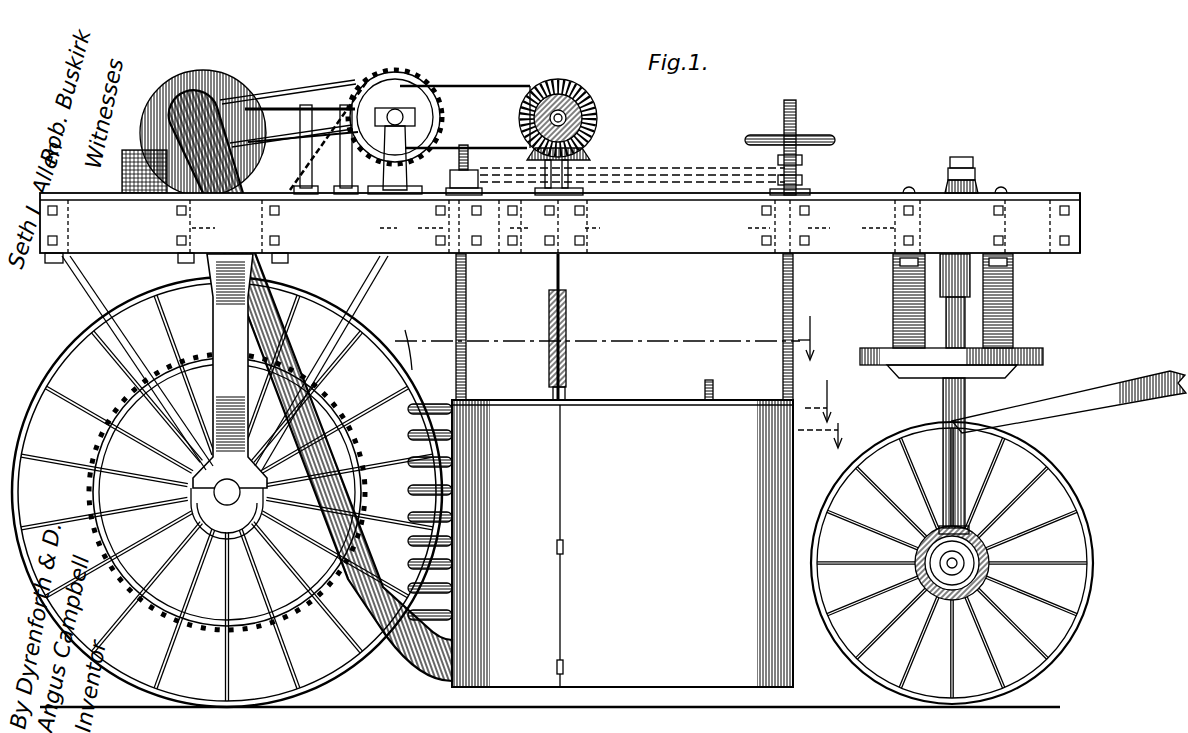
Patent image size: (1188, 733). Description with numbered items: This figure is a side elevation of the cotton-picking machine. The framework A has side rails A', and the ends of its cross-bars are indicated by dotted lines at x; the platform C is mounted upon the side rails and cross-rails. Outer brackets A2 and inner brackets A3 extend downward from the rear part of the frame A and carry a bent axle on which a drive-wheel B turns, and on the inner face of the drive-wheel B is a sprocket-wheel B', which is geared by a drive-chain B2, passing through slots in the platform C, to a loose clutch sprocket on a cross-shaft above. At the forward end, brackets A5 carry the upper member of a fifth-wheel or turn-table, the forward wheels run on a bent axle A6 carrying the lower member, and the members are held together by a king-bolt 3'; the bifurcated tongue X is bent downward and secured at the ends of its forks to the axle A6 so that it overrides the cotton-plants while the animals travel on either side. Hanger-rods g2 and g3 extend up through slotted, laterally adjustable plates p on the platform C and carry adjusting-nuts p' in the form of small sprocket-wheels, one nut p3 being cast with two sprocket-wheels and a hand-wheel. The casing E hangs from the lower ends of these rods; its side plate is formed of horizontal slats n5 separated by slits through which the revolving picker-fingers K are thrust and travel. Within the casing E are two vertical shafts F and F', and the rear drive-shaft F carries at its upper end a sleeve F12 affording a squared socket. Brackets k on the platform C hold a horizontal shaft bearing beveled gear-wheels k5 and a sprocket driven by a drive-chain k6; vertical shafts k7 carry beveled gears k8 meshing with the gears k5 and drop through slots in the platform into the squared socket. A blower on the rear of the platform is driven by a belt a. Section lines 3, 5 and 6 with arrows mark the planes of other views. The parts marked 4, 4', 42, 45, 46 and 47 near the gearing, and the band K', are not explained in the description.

The picker-finger K is at (194, 115).
The belt / elevator band K' is at (310, 396).
The belt a is at (292, 98).
The gear wheel 4 is at (413, 117).
The gear hub and bracket 4' is at (395, 136).
The gear teeth 42 is at (420, 86).
The shaft 45 is at (300, 118).
The standards 46 is at (345, 170).
The lower shaft 47 is at (320, 126).
The adjusting-nut p' is at (476, 151).
The drive-chain k6 is at (490, 86).
The beveled gear-wheel k5 is at (559, 80).
The beveled gear-wheel k8 is at (588, 156).
The bracket k is at (570, 175).
The laterally-adjustable plate p is at (809, 147).
The adjusting-nut with hand-wheel p3 is at (822, 134).
The platform C is at (111, 204).
The side rail A' is at (1105, 223).
The cross-bar ends x is at (558, 226).
The outer bracket A2 is at (90, 290).
The inner bracket A3 is at (192, 512).
The drive-wheel B is at (227, 492).
The sprocket-wheel B' is at (227, 492).
The drive-chain B2 is at (410, 350).
The hanger-rod g2 is at (466, 312).
The hanger-rod g3 is at (783, 312).
The framework A is at (597, 303).
The vertical shaft k7 is at (562, 276).
The vertical sleeve F12 is at (568, 323).
The drive-shaft F is at (588, 381).
The vertical shaft F' is at (723, 386).
The casing E is at (622, 543).
The horizontal slat n5 is at (412, 516).
The bracket A5 is at (893, 308).
The king-bolt 3' is at (995, 301).
The section line 3 is at (940, 347).
The section line 5 is at (827, 401).
The section line 6 is at (829, 433).
The bent front axle A6 is at (950, 405).
The tongue X is at (1140, 372).